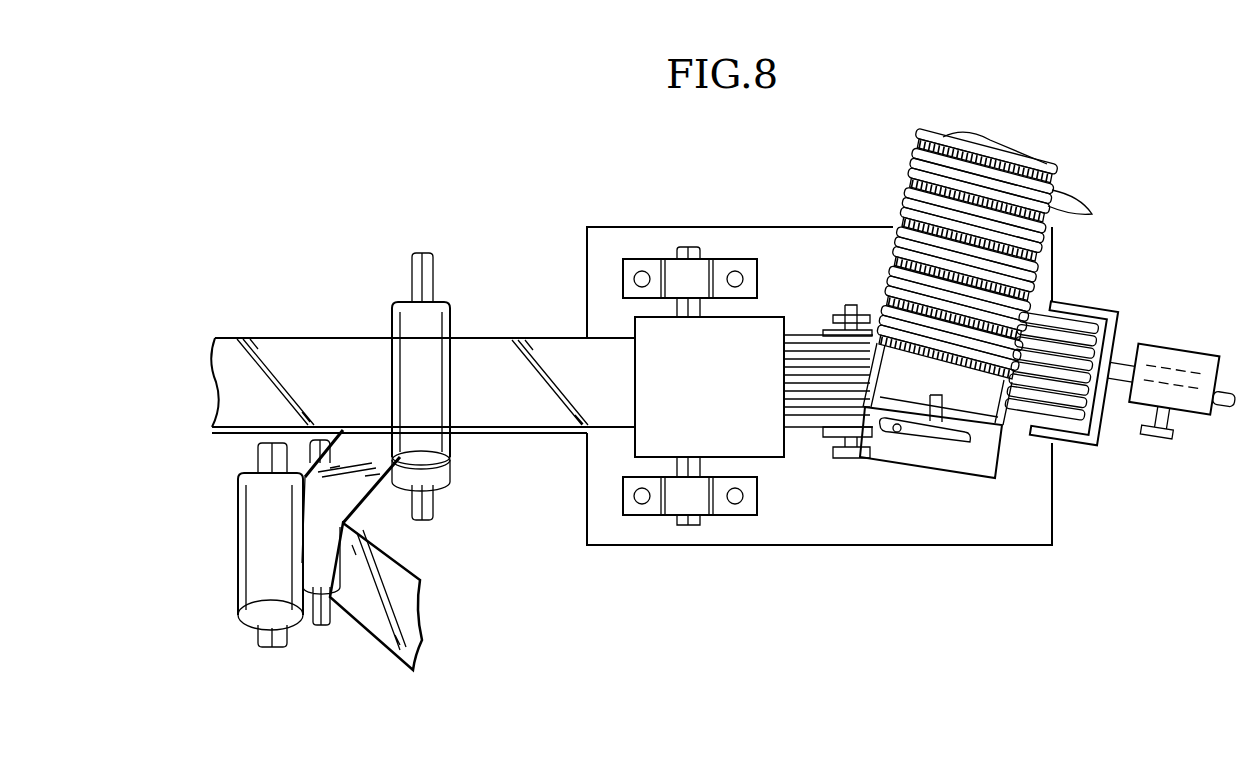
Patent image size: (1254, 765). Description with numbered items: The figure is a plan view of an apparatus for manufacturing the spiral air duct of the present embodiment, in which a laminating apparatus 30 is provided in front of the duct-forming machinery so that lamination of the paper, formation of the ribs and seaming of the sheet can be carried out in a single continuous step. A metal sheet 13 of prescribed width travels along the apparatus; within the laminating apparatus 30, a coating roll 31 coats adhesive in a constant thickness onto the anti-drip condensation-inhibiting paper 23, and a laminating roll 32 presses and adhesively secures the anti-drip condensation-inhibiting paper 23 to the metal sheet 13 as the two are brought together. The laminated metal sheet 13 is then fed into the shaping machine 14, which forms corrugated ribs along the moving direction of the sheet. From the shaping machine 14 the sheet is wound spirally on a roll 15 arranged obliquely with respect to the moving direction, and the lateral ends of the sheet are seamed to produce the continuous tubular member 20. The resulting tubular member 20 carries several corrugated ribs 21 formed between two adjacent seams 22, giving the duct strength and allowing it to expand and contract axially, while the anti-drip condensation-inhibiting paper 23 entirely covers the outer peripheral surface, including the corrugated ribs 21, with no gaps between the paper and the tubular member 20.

The metal sheet 13 is at (290, 350).
The shaping machine 14 is at (767, 443).
The roll 15 is at (912, 397).
The tubular member 20 is at (885, 170).
The corrugated ribs 21 is at (1092, 214).
The seams 22 is at (1060, 184).
The anti-drip condensation-inhibiting paper 23 is at (400, 622).
The apparatus for laminating the anti-drip condensation-inhibiting paper 30 is at (368, 315).
The coating roll 31 is at (256, 553).
The laminating roll 32 is at (450, 480).